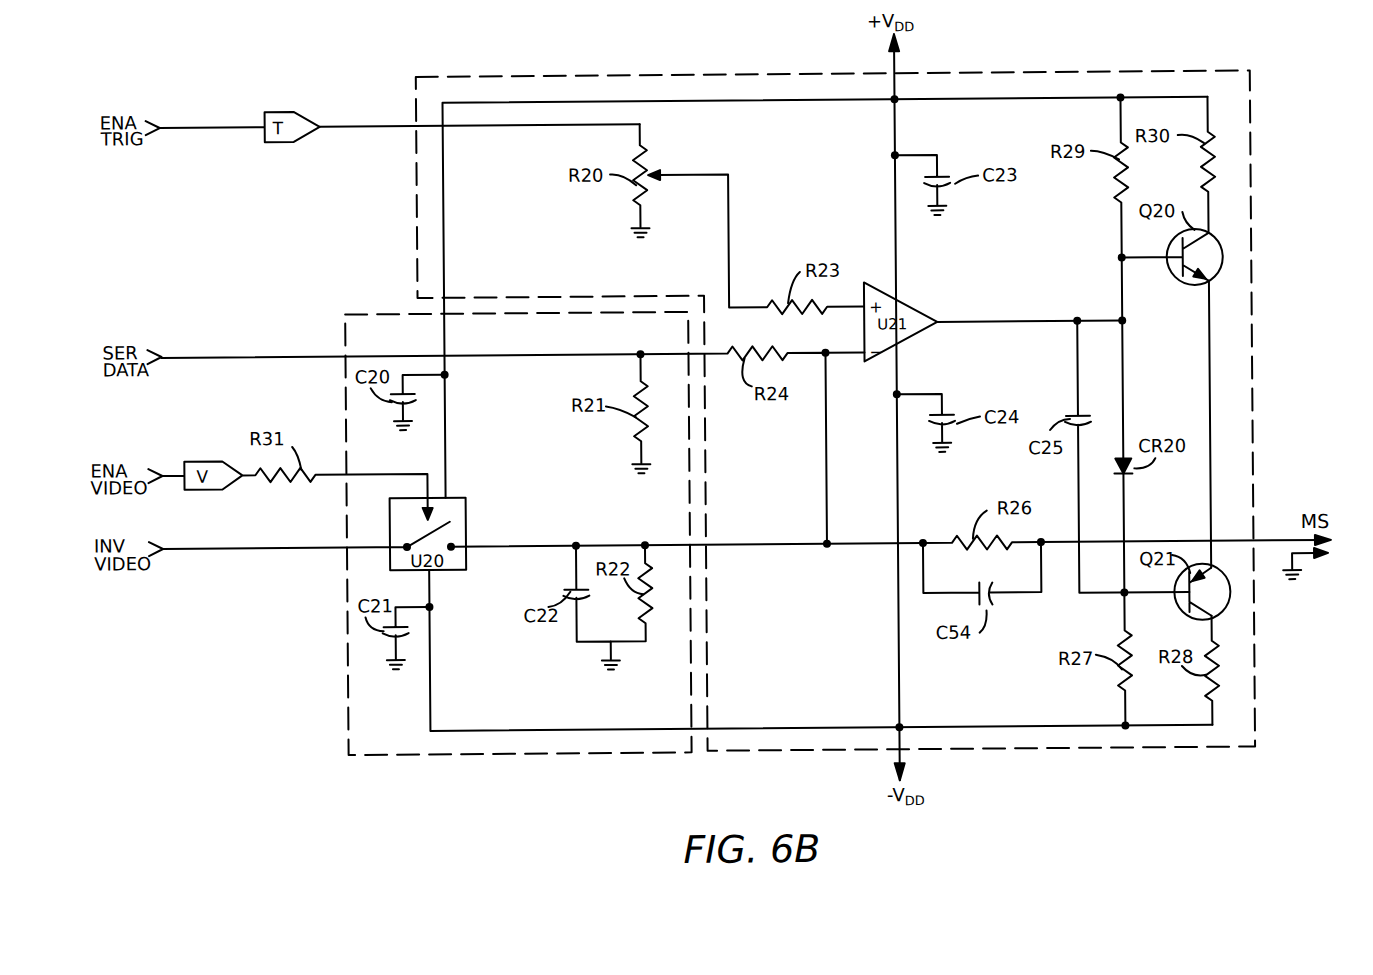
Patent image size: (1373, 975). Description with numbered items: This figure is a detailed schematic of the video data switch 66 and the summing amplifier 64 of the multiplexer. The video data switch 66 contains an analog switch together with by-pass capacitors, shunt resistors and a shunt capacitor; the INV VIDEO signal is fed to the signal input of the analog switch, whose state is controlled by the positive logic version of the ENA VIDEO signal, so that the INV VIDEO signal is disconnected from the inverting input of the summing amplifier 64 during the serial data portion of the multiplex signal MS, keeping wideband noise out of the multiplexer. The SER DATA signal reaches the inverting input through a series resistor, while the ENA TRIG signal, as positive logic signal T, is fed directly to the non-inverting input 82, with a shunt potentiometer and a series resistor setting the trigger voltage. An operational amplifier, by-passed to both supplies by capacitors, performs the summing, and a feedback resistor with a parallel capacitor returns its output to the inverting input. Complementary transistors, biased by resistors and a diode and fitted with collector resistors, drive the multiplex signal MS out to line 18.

The summing amplifier 64 is at (1032, 73).
The video data switch 66 is at (459, 752).
The non-inverting input 82 is at (359, 122).
The line 18 is at (1328, 551).